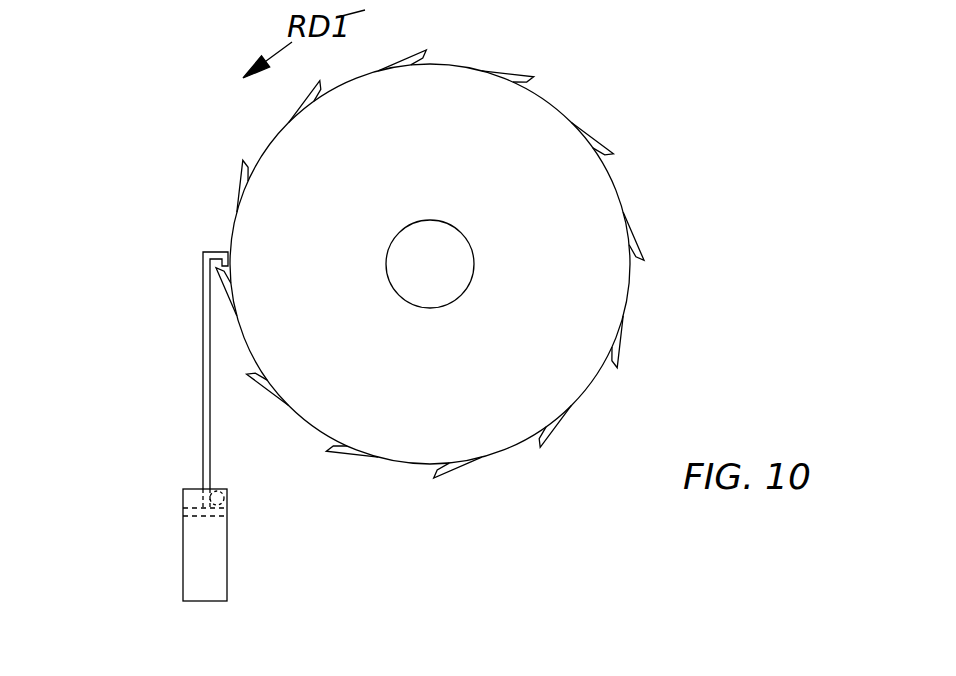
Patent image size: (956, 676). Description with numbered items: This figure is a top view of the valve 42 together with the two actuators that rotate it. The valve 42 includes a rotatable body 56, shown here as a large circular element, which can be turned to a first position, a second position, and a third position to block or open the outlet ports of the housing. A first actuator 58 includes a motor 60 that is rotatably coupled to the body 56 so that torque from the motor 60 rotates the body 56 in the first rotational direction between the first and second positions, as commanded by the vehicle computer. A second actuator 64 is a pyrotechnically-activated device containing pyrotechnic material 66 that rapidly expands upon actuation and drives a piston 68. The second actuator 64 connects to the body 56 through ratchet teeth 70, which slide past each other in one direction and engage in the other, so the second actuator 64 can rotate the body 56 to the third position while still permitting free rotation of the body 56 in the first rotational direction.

The valve 42 is at (488, 264).
The body 56 is at (580, 275).
The first actuator 58 is at (400, 246).
The motor 60 is at (413, 285).
The second actuator 64 is at (185, 426).
The pyrotechnic material 66 is at (227, 500).
The piston 68 is at (200, 518).
The ratchet teeth 70 is at (215, 272).